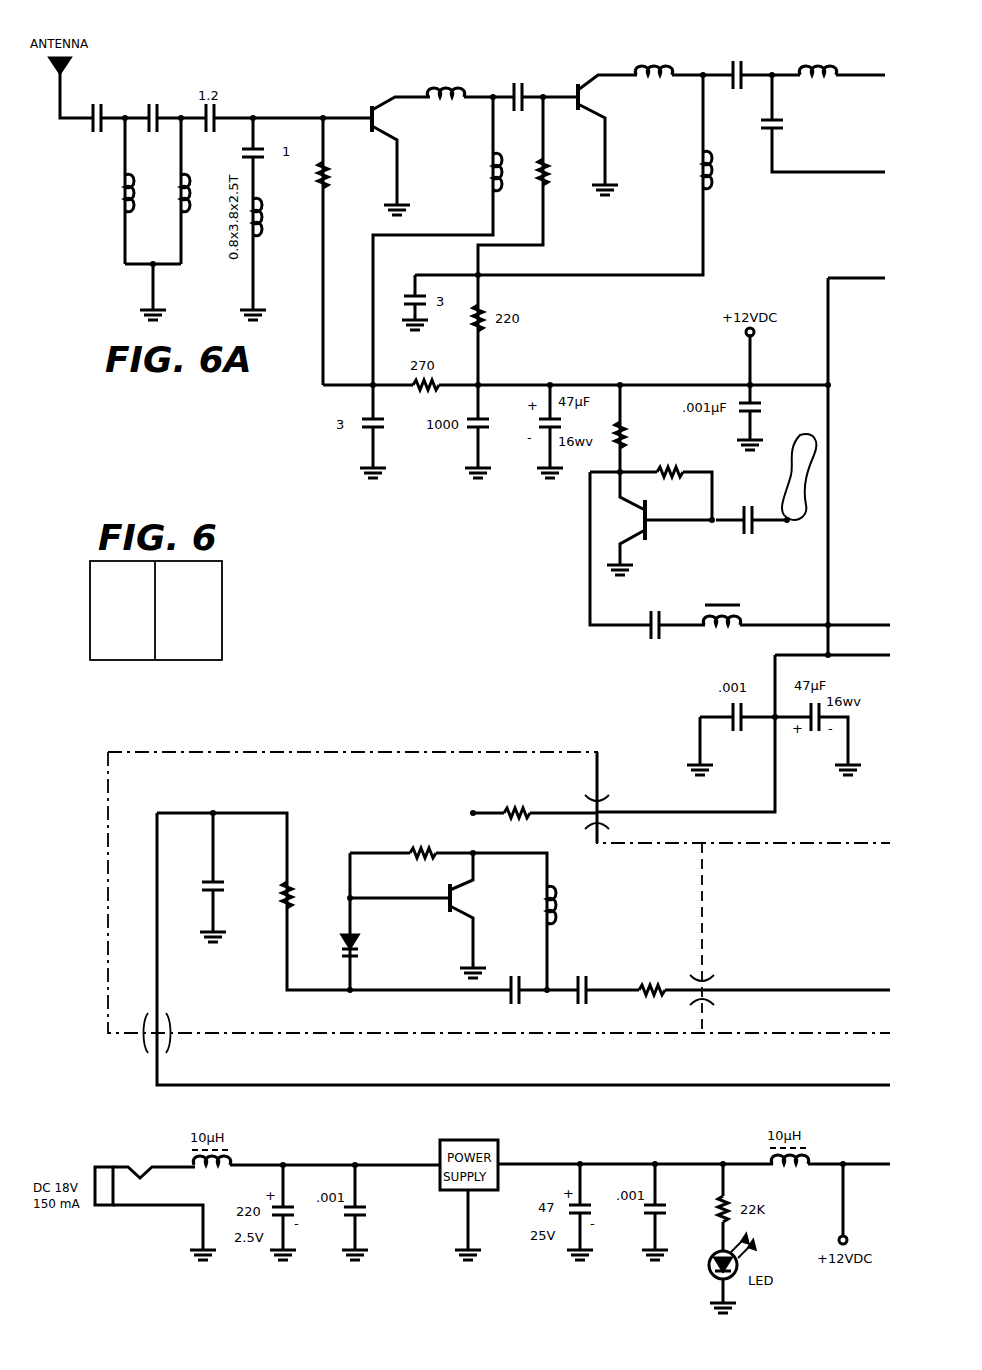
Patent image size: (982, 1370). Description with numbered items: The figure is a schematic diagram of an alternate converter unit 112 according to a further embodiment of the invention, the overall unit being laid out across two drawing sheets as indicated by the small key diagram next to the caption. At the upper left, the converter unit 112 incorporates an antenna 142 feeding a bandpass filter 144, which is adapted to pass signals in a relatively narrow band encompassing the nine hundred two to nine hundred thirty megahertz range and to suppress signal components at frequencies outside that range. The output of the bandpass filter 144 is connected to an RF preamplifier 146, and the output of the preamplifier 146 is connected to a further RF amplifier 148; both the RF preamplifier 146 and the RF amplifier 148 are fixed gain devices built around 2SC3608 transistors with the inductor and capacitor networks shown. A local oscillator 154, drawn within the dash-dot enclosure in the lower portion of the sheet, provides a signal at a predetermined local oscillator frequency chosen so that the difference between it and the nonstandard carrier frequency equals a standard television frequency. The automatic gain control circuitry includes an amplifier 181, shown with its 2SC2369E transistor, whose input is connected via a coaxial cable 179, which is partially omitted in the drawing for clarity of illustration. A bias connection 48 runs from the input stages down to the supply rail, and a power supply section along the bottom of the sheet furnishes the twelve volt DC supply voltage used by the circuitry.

In FIG. 6A, the antenna 142 is at (82, 62).
In FIG. 6A, the bandpass filter 144 is at (177, 57).
In FIG. 6A, the RF preamplifier 146 is at (472, 46).
In FIG. 6A, the RF amplifier 148 is at (705, 42).
In FIG. 6A, the bias supply line 48 is at (323, 266).
In FIG. 6A, the coaxial cable 179 is at (807, 434).
In FIG. 6A, the amplifier 181 is at (522, 558).
In FIG. 6A, the local oscillator 154 is at (90, 876).
In FIG. 6, the converter unit 112 is at (247, 685).